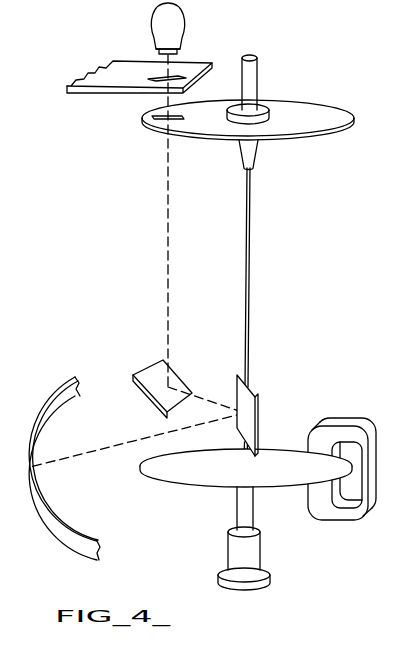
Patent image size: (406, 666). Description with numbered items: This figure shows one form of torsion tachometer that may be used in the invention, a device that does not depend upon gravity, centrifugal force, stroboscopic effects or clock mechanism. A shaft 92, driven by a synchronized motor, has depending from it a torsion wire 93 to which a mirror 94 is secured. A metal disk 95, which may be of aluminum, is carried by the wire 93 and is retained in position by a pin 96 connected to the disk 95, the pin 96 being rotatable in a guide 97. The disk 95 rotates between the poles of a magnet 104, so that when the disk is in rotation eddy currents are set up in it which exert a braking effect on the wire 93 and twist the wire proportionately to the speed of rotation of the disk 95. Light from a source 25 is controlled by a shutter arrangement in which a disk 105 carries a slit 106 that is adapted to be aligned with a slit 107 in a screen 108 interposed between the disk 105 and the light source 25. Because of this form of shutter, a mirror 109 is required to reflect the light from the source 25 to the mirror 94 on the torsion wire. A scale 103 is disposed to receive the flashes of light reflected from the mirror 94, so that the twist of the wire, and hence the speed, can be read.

The light source 25 is at (158, 18).
The shaft 92 is at (258, 82).
The torsion wire 93 is at (250, 272).
The mirror 94 is at (259, 423).
The metal disk 95 is at (273, 485).
The pin 96 is at (254, 514).
The guide 97 is at (257, 552).
The scale 103 is at (77, 386).
The magnet 104 is at (371, 473).
The disk 105 is at (333, 111).
The slit 106 is at (185, 118).
The slit 107 is at (150, 78).
The screen 108 is at (117, 89).
The mirror 109 is at (152, 393).